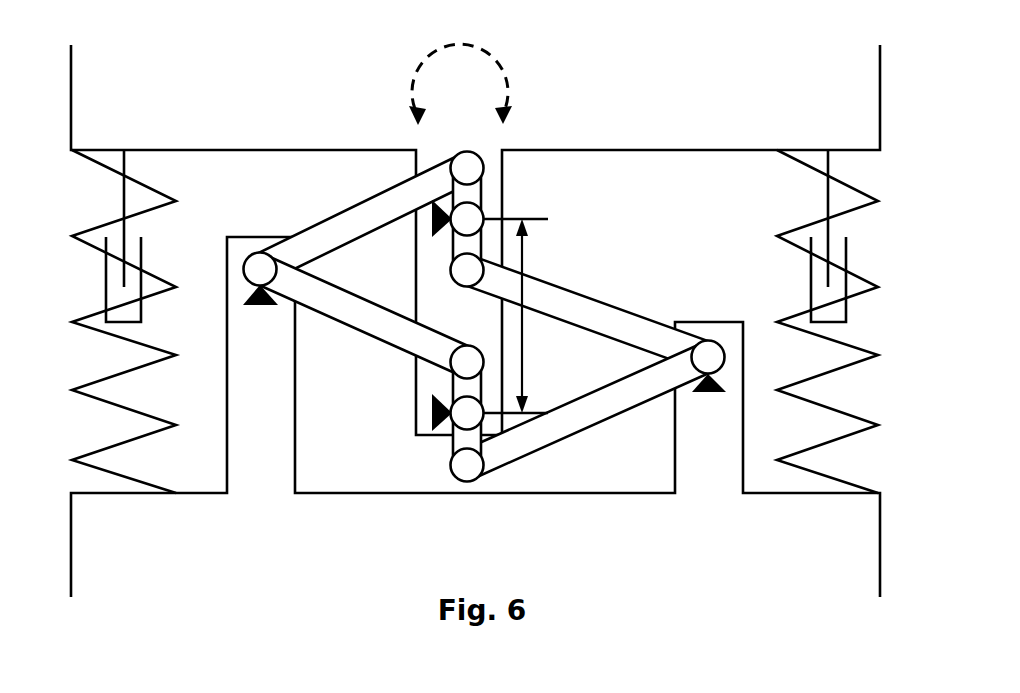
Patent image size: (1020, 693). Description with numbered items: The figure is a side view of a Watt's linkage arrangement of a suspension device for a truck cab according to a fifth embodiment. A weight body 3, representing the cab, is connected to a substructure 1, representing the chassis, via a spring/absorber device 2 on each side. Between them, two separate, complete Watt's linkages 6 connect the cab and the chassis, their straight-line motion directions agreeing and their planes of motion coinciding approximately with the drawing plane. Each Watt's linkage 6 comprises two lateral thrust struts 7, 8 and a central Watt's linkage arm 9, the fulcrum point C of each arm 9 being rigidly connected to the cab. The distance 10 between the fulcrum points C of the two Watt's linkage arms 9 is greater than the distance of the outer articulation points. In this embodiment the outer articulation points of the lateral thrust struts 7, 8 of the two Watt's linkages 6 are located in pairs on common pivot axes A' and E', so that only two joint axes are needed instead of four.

The substructure 1 is at (671, 531).
The spring/absorber device 2 is at (122, 522).
The weight body 3 is at (225, 108).
The Watt's linkage 6 is at (600, 239).
The lateral thrust strut 7 is at (378, 212).
The lateral thrust strut 8 is at (558, 303).
The central Watt's linkage arm 9 is at (463, 246).
The distance 10 is at (518, 316).